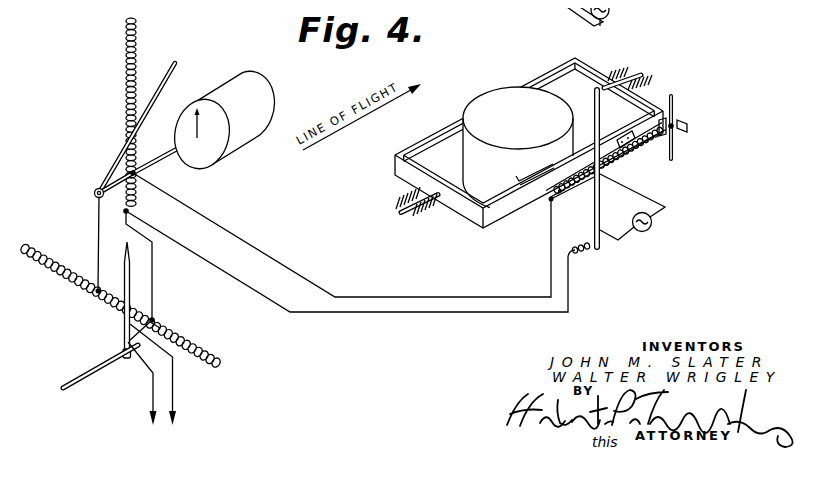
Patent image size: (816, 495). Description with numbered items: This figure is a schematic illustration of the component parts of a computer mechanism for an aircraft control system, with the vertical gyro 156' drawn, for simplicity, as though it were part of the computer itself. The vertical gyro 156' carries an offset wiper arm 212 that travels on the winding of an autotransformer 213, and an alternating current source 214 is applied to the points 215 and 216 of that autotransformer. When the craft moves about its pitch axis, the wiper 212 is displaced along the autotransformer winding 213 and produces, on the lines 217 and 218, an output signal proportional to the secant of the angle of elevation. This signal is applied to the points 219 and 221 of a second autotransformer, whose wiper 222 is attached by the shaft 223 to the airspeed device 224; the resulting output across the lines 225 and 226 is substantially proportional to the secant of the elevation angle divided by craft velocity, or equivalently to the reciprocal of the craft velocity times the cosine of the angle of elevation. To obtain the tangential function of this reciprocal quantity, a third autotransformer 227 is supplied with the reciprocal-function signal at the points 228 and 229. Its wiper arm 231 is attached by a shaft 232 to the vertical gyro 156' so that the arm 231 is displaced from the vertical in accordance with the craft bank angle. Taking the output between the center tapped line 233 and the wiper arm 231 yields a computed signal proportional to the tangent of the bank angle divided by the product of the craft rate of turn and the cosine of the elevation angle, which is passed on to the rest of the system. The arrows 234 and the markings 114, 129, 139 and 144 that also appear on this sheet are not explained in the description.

The vertical gyro 156' is at (518, 133).
The offset wiper arm 212 is at (602, 200).
The autotransformer 213 is at (659, 140).
The alternating current source 214 is at (653, 229).
The point 215 is at (549, 201).
The point 216 is at (603, 176).
The line 217 is at (445, 297).
The line 218 is at (492, 312).
The point 219 is at (136, 174).
The point 221 is at (129, 211).
The wiper 222 is at (115, 160).
The shaft 223 is at (153, 162).
The airspeed device 224 is at (262, 100).
The line 225 is at (97, 221).
The line 226 is at (126, 224).
The third autotransformer 227 is at (192, 346).
The point 228 is at (105, 280).
The point 229 is at (153, 318).
The wiper arm 231 is at (124, 334).
The shaft 232 is at (93, 377).
The center tapped line 233 is at (174, 395).
The arrows 234 is at (140, 411).
The alternating current source 114 is at (609, 13).
The element of other figure 129 is at (551, 7).
The element of other figure 139 is at (70, 8).
The element of other figure 144 is at (37, 16).